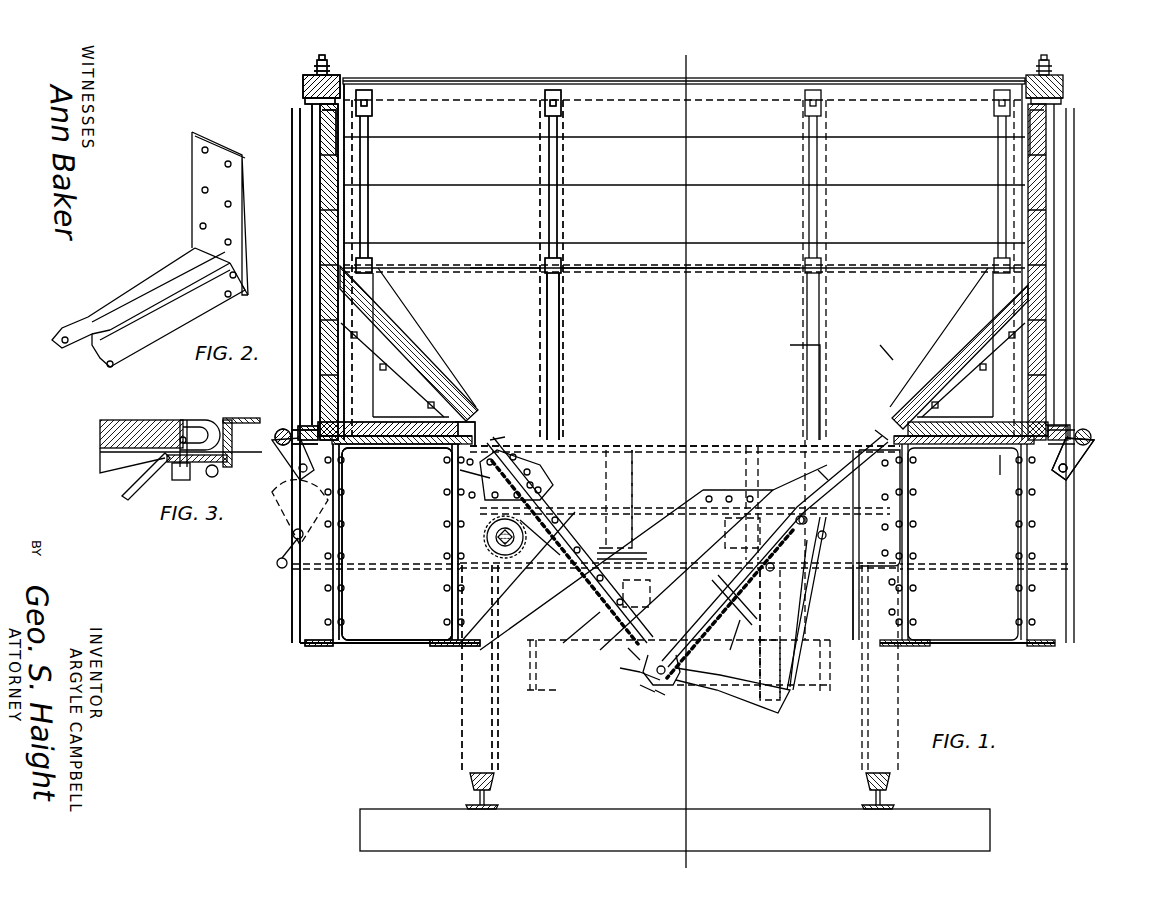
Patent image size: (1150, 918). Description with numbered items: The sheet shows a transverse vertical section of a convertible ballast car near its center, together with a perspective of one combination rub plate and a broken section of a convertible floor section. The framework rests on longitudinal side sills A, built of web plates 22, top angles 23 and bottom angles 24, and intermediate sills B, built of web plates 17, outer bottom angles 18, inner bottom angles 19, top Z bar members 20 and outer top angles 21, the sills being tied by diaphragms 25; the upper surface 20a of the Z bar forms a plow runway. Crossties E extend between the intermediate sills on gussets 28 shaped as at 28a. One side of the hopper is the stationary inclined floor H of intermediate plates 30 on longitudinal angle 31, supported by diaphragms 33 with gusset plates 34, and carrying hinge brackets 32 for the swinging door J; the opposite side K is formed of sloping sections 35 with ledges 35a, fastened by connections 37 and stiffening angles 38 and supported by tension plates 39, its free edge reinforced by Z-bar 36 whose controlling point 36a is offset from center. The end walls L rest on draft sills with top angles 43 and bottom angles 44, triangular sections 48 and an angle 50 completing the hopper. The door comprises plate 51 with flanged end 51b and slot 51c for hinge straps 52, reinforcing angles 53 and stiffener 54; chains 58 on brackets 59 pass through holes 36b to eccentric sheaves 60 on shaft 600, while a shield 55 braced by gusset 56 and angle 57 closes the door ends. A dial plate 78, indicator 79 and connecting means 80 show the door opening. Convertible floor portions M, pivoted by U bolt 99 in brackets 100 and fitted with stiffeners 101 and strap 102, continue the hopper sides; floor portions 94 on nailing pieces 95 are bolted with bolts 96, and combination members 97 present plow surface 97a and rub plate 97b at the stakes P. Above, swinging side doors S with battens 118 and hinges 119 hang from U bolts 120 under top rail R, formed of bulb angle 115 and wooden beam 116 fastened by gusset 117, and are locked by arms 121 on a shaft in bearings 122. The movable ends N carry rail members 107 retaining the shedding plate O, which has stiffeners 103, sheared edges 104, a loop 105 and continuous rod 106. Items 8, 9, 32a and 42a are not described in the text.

In FIG. 1, the wooden beam 116 is at (312, 75).
In FIG. 1, the U bolts 120 is at (323, 66).
In FIG. 1, the top rail R is at (303, 89).
In FIG. 1, the bulb angle 115 is at (305, 102).
In FIG. 1, the hinges 119 is at (322, 121).
In FIG. 1, the gusset 117 is at (340, 146).
In FIG. 1, the swinging side doors S is at (320, 196).
In FIG. 1, the rail member 107 is at (368, 223).
In FIG. 1, the loop 105 is at (490, 271).
In FIG. 1, the continuous rod 106 is at (561, 273).
In FIG. 1, the corrugations or stiffeners 103 is at (560, 343).
In FIG. 1, the edges 104 is at (480, 440).
In FIG. 1, the reinforcing strap 102 is at (900, 363).
In FIG. 3, the reinforcing strap 102 is at (165, 423).
In FIG. 1, the stiffeners 101 is at (917, 371).
In FIG. 3, the stiffeners 101 is at (110, 481).
In FIG. 1, the inclined shedding plate O is at (848, 269).
In FIG. 1, the movable end portions N is at (868, 112).
In FIG. 1, the convertible swinging floor portions M is at (422, 345).
In FIG. 1, the battens 118 is at (300, 331).
In FIG. 1, the combination member 97 is at (270, 315).
In FIG. 2, the combination member 97 is at (238, 293).
In FIG. 2, the plow riding surface 97a is at (115, 309).
In FIG. 1, the rub plate surface 97b is at (1018, 381).
In FIG. 2, the rub plate surface 97b is at (245, 198).
In FIG. 1, the floor portions 94 is at (317, 421).
In FIG. 1, the nailing pieces 95 is at (330, 441).
In FIG. 1, the bolts 96 is at (1000, 474).
In FIG. 1, the arms 121 is at (1050, 433).
In FIG. 1, the shaft supporting bearings 122 is at (1078, 464).
In FIG. 1, the top angles 23 is at (357, 454).
In FIG. 1, the outer top angles 21 is at (427, 451).
In FIG. 1, the top Z bar members 20 is at (483, 428).
In FIG. 1, the upper surface of Z bar 20a is at (480, 394).
In FIG. 3, the upper surface of Z bar 20a is at (232, 419).
In FIG. 1, the ledges 35a is at (493, 440).
In FIG. 1, the brace pin 32a is at (887, 435).
In FIG. 1, the upper stationary inclined floor H is at (822, 478).
In FIG. 1, the connections 37 is at (533, 482).
In FIG. 1, the top angles 43 is at (600, 458).
In FIG. 1, the bracket flange 42a is at (614, 499).
In FIG. 1, the crossties E is at (550, 461).
In FIG. 1, the stiffening angles 38 is at (467, 474).
In FIG. 1, the shaft 600 is at (484, 527).
In FIG. 1, the sheave members 60 is at (488, 537).
In FIG. 1, the gusset shape 28a is at (540, 528).
In FIG. 1, the inclined stationary floor K is at (547, 551).
In FIG. 1, the bottom angles 44 is at (627, 563).
In FIG. 1, the tension plates 39 is at (670, 540).
In FIG. 1, the intermediate plates 30 is at (827, 464).
In FIG. 1, the triangular end hopper sections 48 is at (770, 545).
In FIG. 1, the slot 51c is at (780, 525).
In FIG. 1, the angle / pivot 57 is at (827, 534).
In FIG. 1, the diaphragms 33 is at (857, 539).
In FIG. 1, the web plates 17 is at (450, 571).
In FIG. 1, the longitudinally extending angle 31 is at (880, 598).
In FIG. 1, the door supporting brackets 32 is at (807, 611).
In FIG. 1, the gusset plate 34 is at (808, 603).
In FIG. 1, the angle 50 is at (653, 607).
In FIG. 1, the door plate 51 is at (697, 609).
In FIG. 1, the brackets 59 is at (735, 610).
In FIG. 1, the hinge straps 52 is at (772, 635).
In FIG. 1, the reinforcing angles 53 is at (733, 624).
In FIG. 1, the end wall or shield 55 is at (717, 670).
In FIG. 1, the vertical gusset 56 is at (777, 683).
In FIG. 1, the flanged end 51b is at (790, 584).
In FIG. 1, the gussets 28 is at (480, 593).
In FIG. 1, the sloping side sections 35 is at (607, 590).
In FIG. 1, the chains 58 is at (600, 640).
In FIG. 1, the inclined end wall L is at (630, 651).
In FIG. 1, the holes 36b is at (623, 676).
In FIG. 1, the Z-bar 36 is at (637, 674).
In FIG. 1, the controlling point 36a is at (655, 693).
In FIG. 1, the stiffener 54 is at (643, 691).
In FIG. 1, the swinging door J is at (665, 693).
In FIG. 1, the dial plate 78 is at (283, 510).
In FIG. 1, the indicator 79 is at (278, 551).
In FIG. 1, the connecting means 80 is at (368, 572).
In FIG. 1, the web plates 22 is at (305, 626).
In FIG. 1, the bottom angles 24 is at (310, 644).
In FIG. 1, the longitudinal side sills A is at (323, 649).
In FIG. 1, the diaphragms 25 is at (382, 644).
In FIG. 1, the outer bottom angles 18 is at (440, 654).
In FIG. 1, the intermediate longitudinal sills B is at (453, 651).
In FIG. 1, the inner bottom angles 19 is at (477, 654).
In FIG. 1, the frame member 8 is at (537, 700).
In FIG. 1, the leg / base 9 is at (498, 744).
In FIG. 1, the vertical stakes P is at (310, 598).
In FIG. 3, the U bolt 99 is at (185, 423).
In FIG. 3, the brackets 100 is at (173, 471).